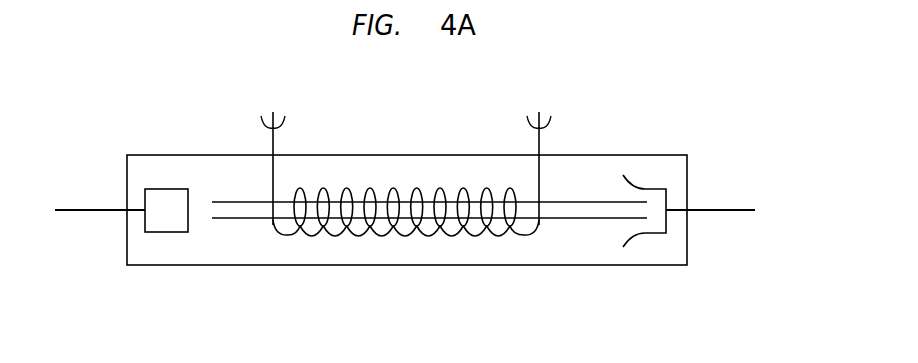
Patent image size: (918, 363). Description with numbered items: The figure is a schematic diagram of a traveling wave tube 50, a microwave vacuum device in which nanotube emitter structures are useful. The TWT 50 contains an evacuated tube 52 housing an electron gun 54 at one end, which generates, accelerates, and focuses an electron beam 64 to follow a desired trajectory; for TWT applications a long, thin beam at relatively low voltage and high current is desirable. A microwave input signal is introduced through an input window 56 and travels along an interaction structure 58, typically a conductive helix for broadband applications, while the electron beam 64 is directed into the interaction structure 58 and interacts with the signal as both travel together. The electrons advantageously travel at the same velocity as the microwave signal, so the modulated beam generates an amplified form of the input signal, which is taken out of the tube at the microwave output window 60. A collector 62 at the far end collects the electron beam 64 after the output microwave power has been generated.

The traveling wave tube 50 is at (782, 161).
The evacuated tube 52 is at (396, 155).
The electron gun 54 is at (188, 192).
The input window 56 is at (262, 120).
The interaction structure 58 is at (543, 278).
The microwave output window 60 is at (529, 120).
The collector 62 is at (641, 188).
The electron beam 64 is at (256, 210).